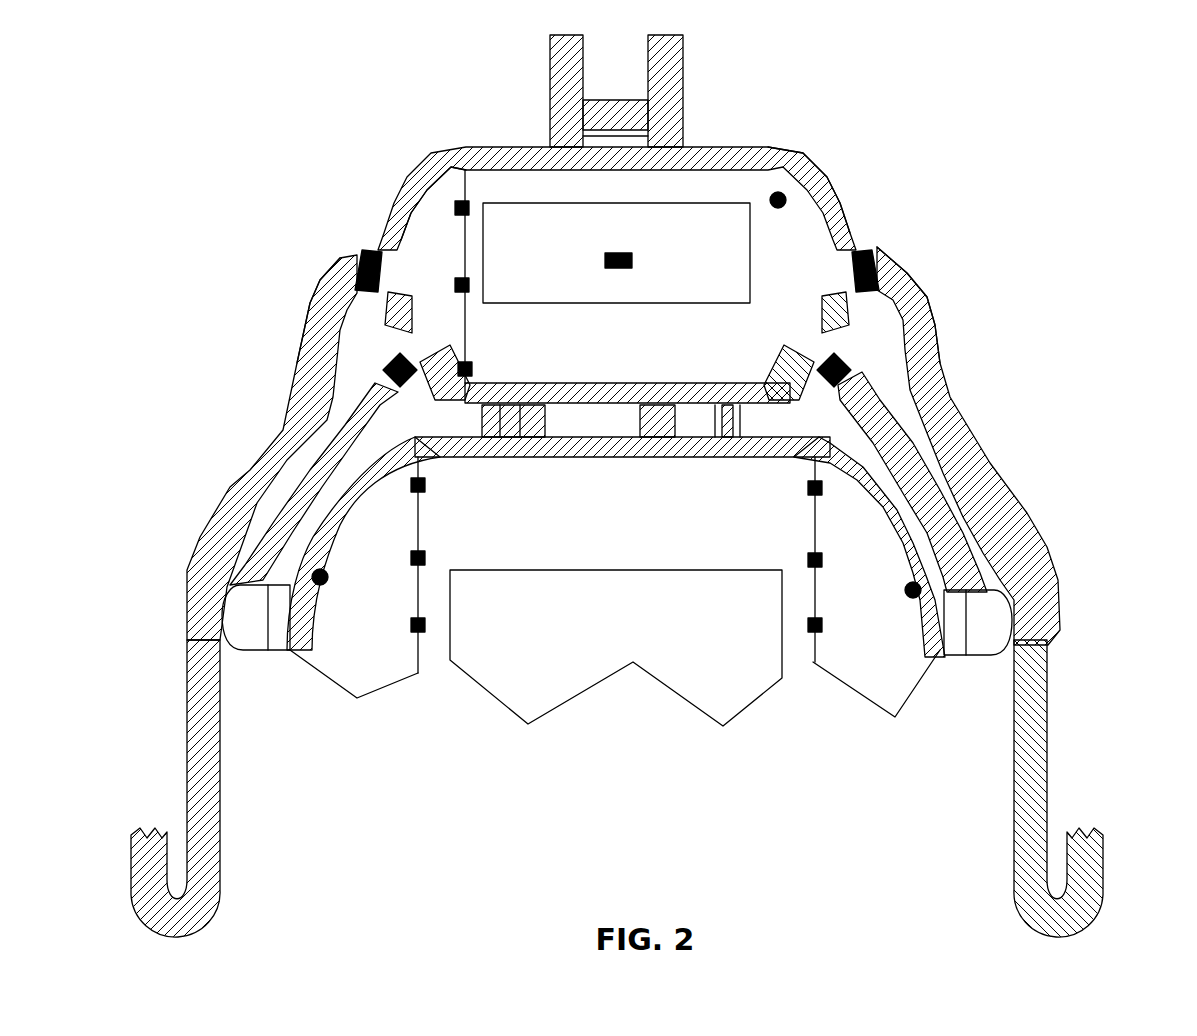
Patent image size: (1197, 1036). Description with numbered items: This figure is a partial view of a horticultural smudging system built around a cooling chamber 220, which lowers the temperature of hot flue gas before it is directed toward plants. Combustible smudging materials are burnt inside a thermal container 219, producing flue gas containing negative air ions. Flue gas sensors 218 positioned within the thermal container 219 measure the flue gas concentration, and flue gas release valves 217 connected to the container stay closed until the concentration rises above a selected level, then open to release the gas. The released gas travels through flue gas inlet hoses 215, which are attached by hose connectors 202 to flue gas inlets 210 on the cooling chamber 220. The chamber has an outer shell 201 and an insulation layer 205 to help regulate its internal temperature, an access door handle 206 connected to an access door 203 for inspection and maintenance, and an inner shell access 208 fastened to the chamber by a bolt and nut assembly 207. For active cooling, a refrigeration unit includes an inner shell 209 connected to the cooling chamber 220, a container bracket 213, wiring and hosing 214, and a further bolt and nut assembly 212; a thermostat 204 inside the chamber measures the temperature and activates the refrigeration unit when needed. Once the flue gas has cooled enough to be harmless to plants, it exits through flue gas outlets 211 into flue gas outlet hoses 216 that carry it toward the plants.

The outer shell 201 is at (812, 160).
The hose connector 202 is at (872, 265).
The access door 203 is at (725, 257).
The thermostat 204 is at (790, 200).
The insulation layer 205 is at (800, 152).
The access door handle 206 is at (612, 256).
The bolt and nut assembly 207 is at (458, 207).
The inner shell access 208 is at (458, 243).
The inner shell 209 is at (440, 215).
The flue gas inlet 210 is at (368, 260).
The flue gas outlet 211 is at (358, 290).
The bolt and nut assembly 212 is at (418, 347).
The container bracket 213 is at (485, 418).
The wiring and hosing 214 is at (485, 432).
The flue gas inlet hose 215 is at (305, 425).
The flue gas outlet hose 216 is at (190, 680).
The flue gas release valve 217 is at (288, 652).
The flue gas sensor 218 is at (322, 586).
The thermal container 219 is at (580, 655).
The cooling chamber 220 is at (742, 142).